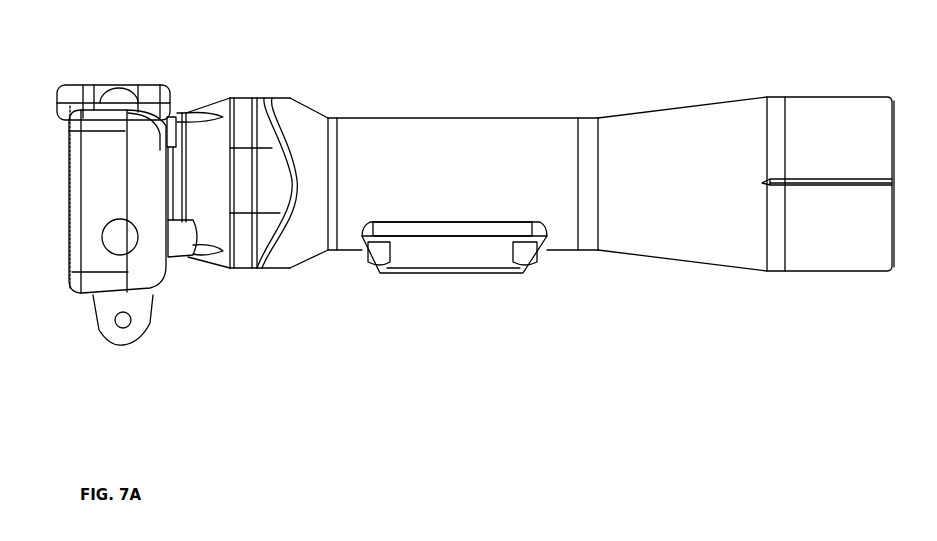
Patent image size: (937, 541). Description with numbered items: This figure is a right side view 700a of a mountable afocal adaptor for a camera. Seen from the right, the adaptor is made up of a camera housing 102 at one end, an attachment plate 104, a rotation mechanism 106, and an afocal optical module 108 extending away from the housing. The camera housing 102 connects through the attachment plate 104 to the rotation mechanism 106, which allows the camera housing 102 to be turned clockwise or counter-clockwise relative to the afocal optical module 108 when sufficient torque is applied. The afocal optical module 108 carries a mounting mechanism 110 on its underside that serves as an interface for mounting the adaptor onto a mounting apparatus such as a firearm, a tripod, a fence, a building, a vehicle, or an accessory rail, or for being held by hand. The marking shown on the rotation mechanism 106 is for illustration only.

The camera housing 102 is at (105, 192).
The attachment plate 104 is at (181, 112).
The rotation mechanism 106 is at (243, 104).
The afocal optical module 108 is at (452, 133).
The mounting mechanism 110 is at (447, 262).
The right side view 700a is at (135, 411).